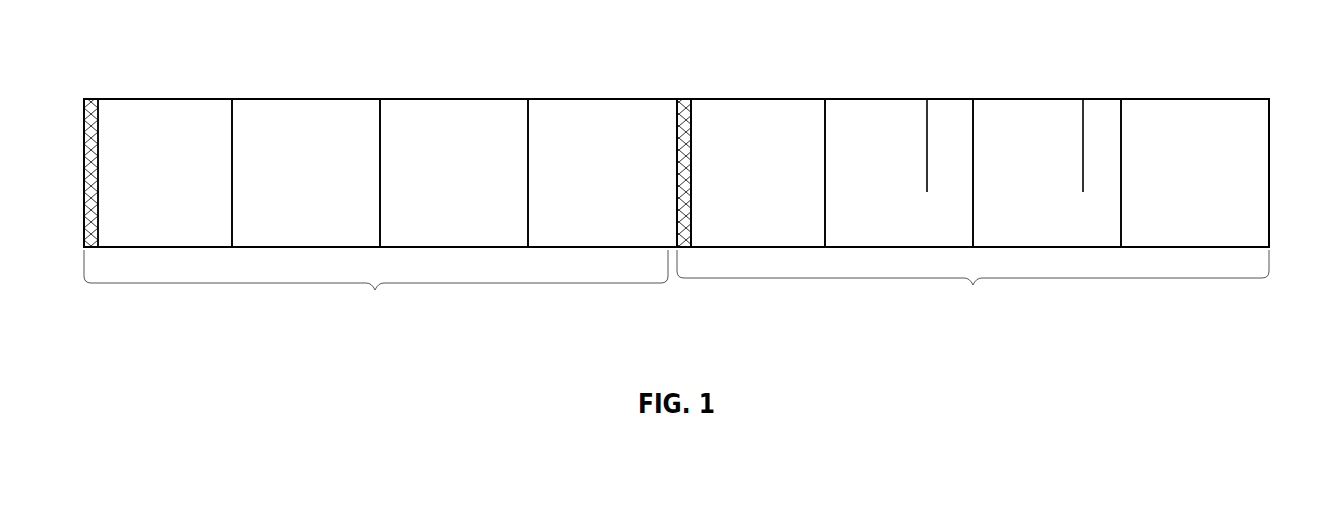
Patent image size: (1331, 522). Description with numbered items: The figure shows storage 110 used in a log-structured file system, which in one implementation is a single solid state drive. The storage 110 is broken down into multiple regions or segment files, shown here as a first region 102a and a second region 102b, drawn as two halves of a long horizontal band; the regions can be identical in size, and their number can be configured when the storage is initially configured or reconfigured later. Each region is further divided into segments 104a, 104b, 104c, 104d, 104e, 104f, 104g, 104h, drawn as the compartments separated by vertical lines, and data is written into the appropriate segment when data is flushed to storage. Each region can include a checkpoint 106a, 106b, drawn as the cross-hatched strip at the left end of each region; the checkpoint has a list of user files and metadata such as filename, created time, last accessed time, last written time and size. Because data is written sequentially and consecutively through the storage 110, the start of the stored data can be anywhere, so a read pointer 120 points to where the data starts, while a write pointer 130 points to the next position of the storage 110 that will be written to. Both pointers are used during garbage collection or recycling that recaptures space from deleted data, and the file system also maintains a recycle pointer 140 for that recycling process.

The storage 110 is at (1269, 100).
The region 102a is at (376, 289).
The region 102b is at (973, 288).
The segment 104a is at (166, 101).
The segment 104b is at (288, 101).
The segment 104c is at (426, 101).
The segment 104d is at (584, 101).
The segment 104e is at (732, 101).
The segment 104f is at (870, 101).
The segment 104g is at (1016, 101).
The segment 104h is at (1167, 101).
The checkpoint 106a is at (88, 153).
The checkpoint 106b is at (677, 153).
The read pointer 120 is at (678, 102).
The write pointer 130 is at (927, 101).
The recycle pointer 140 is at (1083, 101).